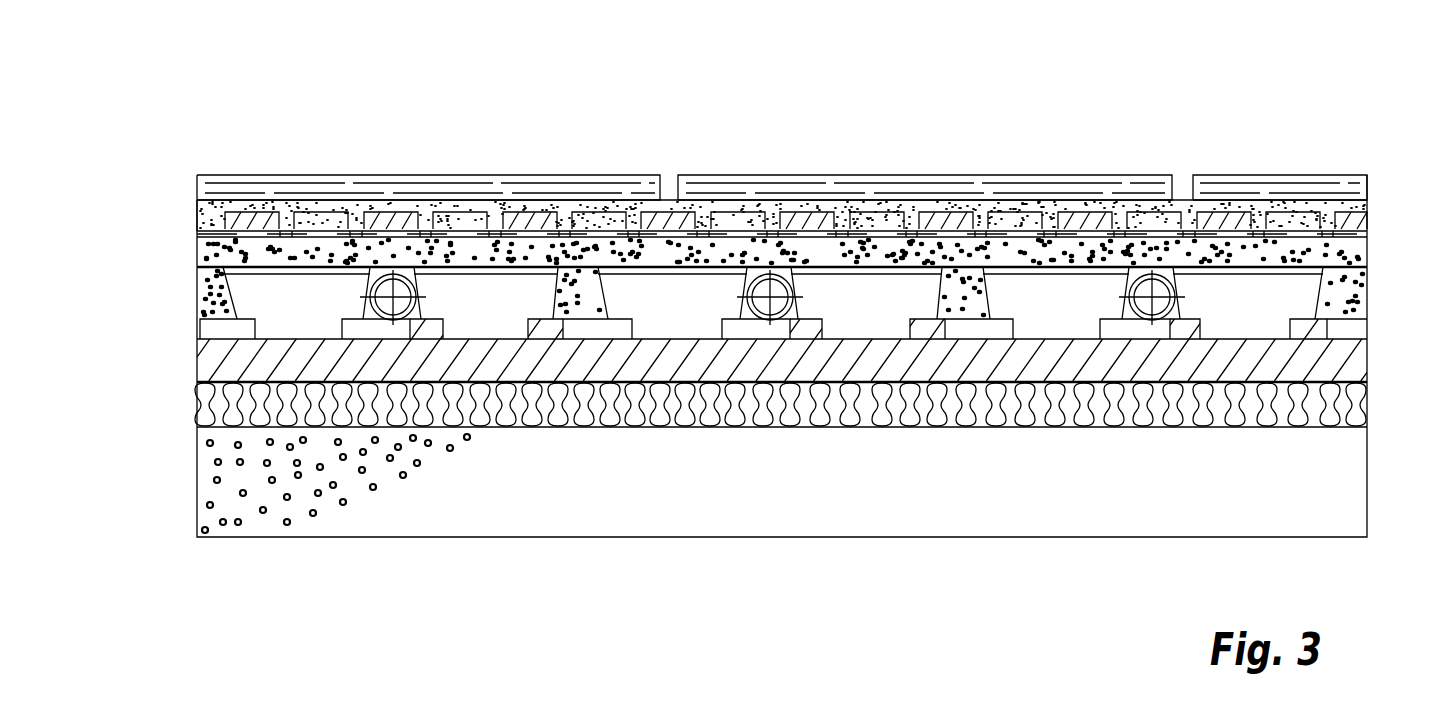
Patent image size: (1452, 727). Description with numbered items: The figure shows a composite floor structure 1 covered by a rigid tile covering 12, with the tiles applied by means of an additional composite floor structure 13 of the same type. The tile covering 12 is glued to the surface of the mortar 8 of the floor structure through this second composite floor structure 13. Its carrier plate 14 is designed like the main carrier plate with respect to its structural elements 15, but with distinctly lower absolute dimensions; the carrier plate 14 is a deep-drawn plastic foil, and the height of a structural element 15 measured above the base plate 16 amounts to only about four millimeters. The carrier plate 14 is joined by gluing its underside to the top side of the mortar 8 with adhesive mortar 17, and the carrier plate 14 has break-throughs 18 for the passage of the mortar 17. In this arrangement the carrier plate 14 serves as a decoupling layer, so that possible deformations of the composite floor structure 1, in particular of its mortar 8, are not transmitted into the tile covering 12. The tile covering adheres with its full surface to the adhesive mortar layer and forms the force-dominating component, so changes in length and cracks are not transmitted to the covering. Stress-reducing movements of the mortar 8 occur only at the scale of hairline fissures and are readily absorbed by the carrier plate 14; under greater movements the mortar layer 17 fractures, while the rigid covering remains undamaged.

The composite floor structure 1 is at (1372, 294).
The mortar 8 is at (205, 285).
The tile covering 12 is at (696, 175).
The composite floor structure 13 is at (1384, 214).
The carrier plate 14 is at (191, 222).
The structural element 15 is at (407, 211).
The base plate 16 is at (352, 224).
The mortar 17 is at (767, 208).
The break-throughs 18 is at (1010, 225).